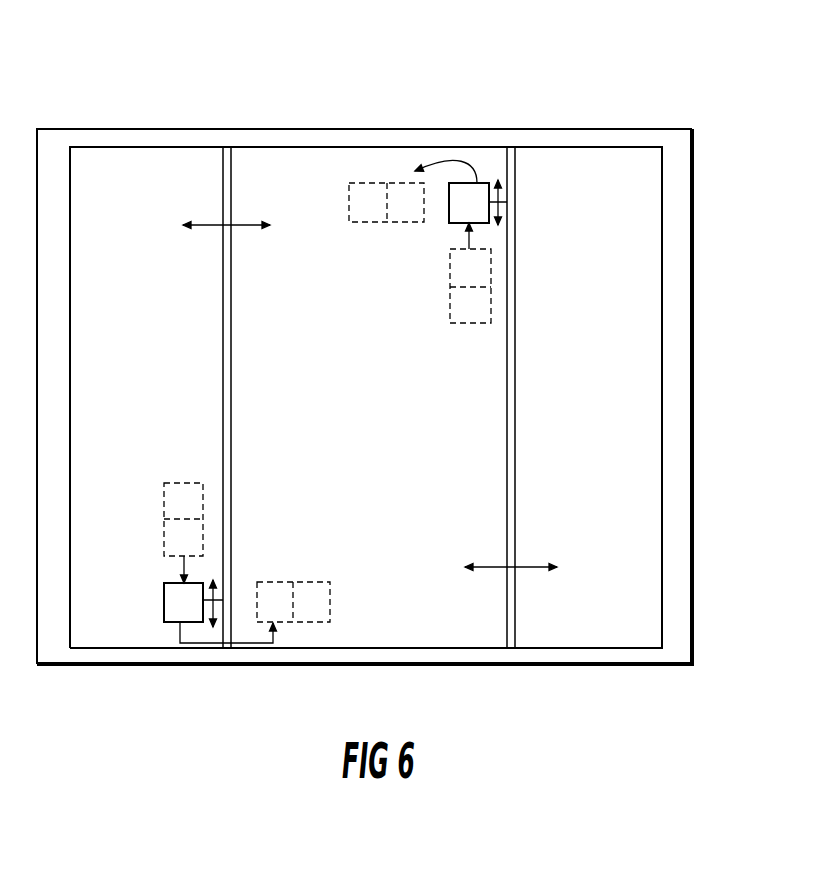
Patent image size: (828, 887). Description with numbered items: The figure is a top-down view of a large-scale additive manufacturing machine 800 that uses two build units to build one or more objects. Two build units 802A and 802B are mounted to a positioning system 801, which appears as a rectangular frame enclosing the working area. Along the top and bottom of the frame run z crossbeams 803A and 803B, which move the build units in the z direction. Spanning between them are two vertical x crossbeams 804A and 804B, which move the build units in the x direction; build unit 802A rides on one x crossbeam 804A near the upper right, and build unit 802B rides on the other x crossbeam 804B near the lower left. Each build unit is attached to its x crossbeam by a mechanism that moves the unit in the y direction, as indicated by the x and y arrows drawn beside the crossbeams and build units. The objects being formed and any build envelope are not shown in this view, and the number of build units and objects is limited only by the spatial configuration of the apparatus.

The large-scale additive manufacturing machine 800 is at (375, 379).
The positioning system 801 is at (675, 128).
The build unit 802A is at (477, 183).
The build unit 802B is at (164, 600).
The z crossbeam 803A is at (152, 128).
The z crossbeam 803B is at (112, 668).
The x crossbeam 804A is at (232, 347).
The x crossbeam 804B is at (515, 453).